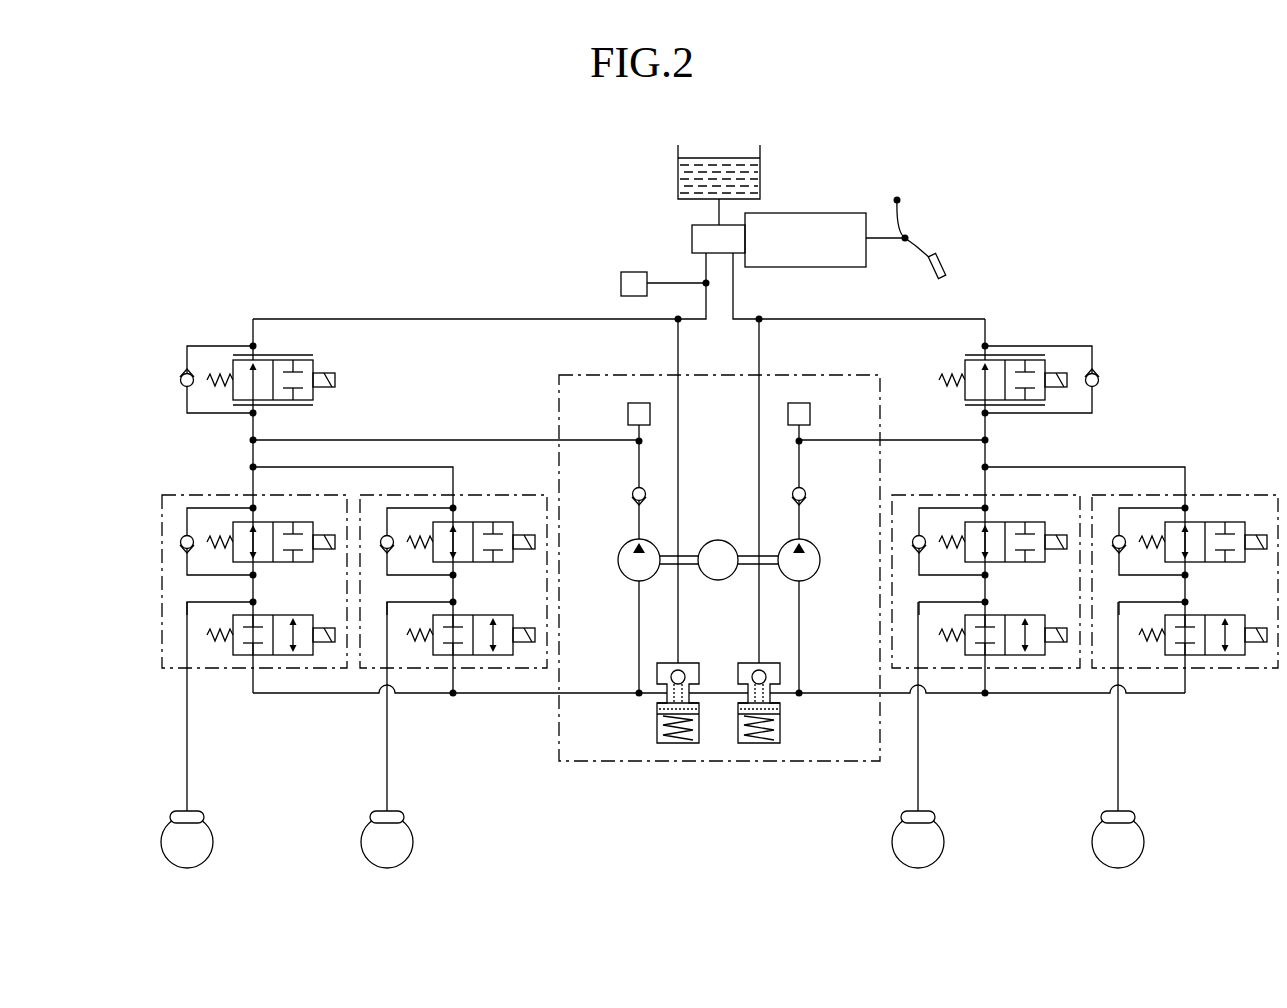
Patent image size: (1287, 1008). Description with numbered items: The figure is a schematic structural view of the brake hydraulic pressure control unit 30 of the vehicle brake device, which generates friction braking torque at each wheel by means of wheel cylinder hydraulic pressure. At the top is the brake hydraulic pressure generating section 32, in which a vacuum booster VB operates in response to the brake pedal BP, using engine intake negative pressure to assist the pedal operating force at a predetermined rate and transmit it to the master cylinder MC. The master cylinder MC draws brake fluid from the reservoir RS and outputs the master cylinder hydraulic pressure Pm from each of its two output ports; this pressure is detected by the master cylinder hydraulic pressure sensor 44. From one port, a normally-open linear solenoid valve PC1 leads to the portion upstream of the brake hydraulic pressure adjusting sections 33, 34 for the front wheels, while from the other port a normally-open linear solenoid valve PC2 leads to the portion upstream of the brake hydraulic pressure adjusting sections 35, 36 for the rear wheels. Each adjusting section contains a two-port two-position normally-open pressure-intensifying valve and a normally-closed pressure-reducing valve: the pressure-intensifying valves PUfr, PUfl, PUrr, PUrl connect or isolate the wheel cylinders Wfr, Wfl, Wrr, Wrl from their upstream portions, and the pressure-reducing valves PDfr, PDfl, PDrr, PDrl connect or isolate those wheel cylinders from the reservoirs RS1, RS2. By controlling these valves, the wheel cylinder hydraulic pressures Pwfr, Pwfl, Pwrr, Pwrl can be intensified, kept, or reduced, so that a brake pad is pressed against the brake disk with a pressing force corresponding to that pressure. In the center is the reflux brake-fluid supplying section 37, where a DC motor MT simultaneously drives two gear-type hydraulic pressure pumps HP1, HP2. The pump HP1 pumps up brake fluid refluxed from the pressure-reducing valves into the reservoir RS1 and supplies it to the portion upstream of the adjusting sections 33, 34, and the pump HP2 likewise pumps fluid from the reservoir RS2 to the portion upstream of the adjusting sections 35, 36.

The brake hydraulic pressure control unit 30 is at (787, 180).
The brake hydraulic pressure generating section 32 is at (874, 220).
The master cylinder hydraulic pressure sensor 44 is at (621, 284).
The brake hydraulic pressure adjusting section 33 is at (1101, 495).
The brake hydraulic pressure adjusting section 34 is at (901, 495).
The brake hydraulic pressure adjusting section 35 is at (369, 495).
The brake hydraulic pressure adjusting section 36 is at (169, 495).
The reflux brake-fluid supplying section 37 is at (784, 762).
The reservoir RS is at (760, 183).
The master cylinder MC is at (692, 240).
The vacuum booster VB is at (805, 240).
The brake pedal BP is at (945, 262).
The normally-open linear solenoid valve PC2 is at (310, 355).
The normally-open linear solenoid valve PC1 is at (968, 355).
The pressure-intensifying valve PUrl is at (270, 522).
The pressure-reducing valve PDrl is at (270, 615).
The pressure-intensifying valve PUrr is at (470, 522).
The pressure-reducing valve PDrr is at (470, 615).
The pressure-intensifying valve PUfl is at (1002, 522).
The pressure-reducing valve PDfl is at (1002, 615).
The pressure-intensifying valve PUfr is at (1202, 522).
The pressure-reducing valve PDfr is at (1202, 615).
The hydraulic pressure pump HP2 is at (636, 583).
The hydraulic pressure pump HP1 is at (803, 583).
The DC motor MT is at (718, 581).
The reservoir RS2 is at (657, 726).
The reservoir RS1 is at (781, 726).
The master cylinder hydraulic pressure Pm is at (619, 286).
The wheel cylinder hydraulic pressure Pwrl is at (215, 706).
The wheel cylinder hydraulic pressure Pwrr is at (417, 706).
The wheel cylinder hydraulic pressure Pwfl is at (946, 706).
The wheel cylinder hydraulic pressure Pwfr is at (1148, 706).
The wheel cylinder Wrl is at (175, 811).
The wheel cylinder Wrr is at (400, 811).
The wheel cylinder Wfl is at (931, 811).
The wheel cylinder Wfr is at (1131, 811).